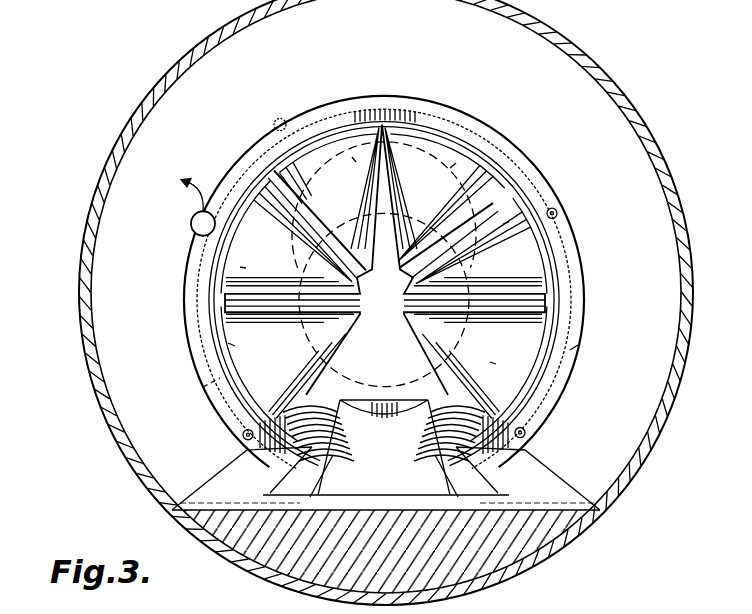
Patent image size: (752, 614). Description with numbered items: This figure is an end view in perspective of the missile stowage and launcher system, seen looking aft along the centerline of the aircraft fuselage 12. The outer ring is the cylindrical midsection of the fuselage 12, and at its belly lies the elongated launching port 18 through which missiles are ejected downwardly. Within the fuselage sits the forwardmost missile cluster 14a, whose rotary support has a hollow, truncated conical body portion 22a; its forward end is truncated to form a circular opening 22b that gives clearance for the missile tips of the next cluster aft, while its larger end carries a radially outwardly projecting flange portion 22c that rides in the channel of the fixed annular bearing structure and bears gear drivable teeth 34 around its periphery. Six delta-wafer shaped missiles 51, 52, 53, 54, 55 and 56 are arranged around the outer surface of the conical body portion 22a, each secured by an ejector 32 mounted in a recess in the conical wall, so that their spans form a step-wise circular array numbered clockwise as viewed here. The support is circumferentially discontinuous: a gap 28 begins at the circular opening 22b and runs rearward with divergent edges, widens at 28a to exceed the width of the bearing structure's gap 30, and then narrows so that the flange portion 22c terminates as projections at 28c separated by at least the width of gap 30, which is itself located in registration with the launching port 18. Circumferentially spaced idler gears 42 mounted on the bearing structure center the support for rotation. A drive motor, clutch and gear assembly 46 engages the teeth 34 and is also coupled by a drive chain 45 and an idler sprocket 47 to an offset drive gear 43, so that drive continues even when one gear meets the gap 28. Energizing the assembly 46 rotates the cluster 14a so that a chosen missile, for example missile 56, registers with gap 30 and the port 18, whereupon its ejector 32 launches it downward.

The fuselage 12 is at (670, 412).
The forwardmost missile cluster 14a is at (176, 287).
The launching port 18 is at (440, 490).
The conical body portion 22a is at (556, 296).
The circular opening 22b is at (462, 283).
The flange portion 22c is at (565, 365).
The gap 28 is at (306, 367).
The widened portion of gap 28a is at (440, 388).
The flange projection ends 28c is at (257, 457).
The gap in bearing structure 30 is at (327, 467).
The ejector 32 is at (203, 387).
The gear drivable teeth 34 is at (578, 345).
The idler gears 42 is at (557, 217).
The drive gear 43 is at (388, 100).
The drive chain 45 is at (240, 152).
The drive motor, clutch and gear assembly 46 is at (192, 233).
The idler sprocket 47 is at (283, 122).
The delta-wafer shaped missile 51 is at (228, 343).
The delta-wafer shaped missile 52 is at (240, 267).
The delta-wafer shaped missile 53 is at (352, 157).
The delta-wafer shaped missile 54 is at (456, 163).
The delta-wafer shaped missile 55 is at (509, 222).
The delta-wafer shaped missile 56 is at (496, 364).